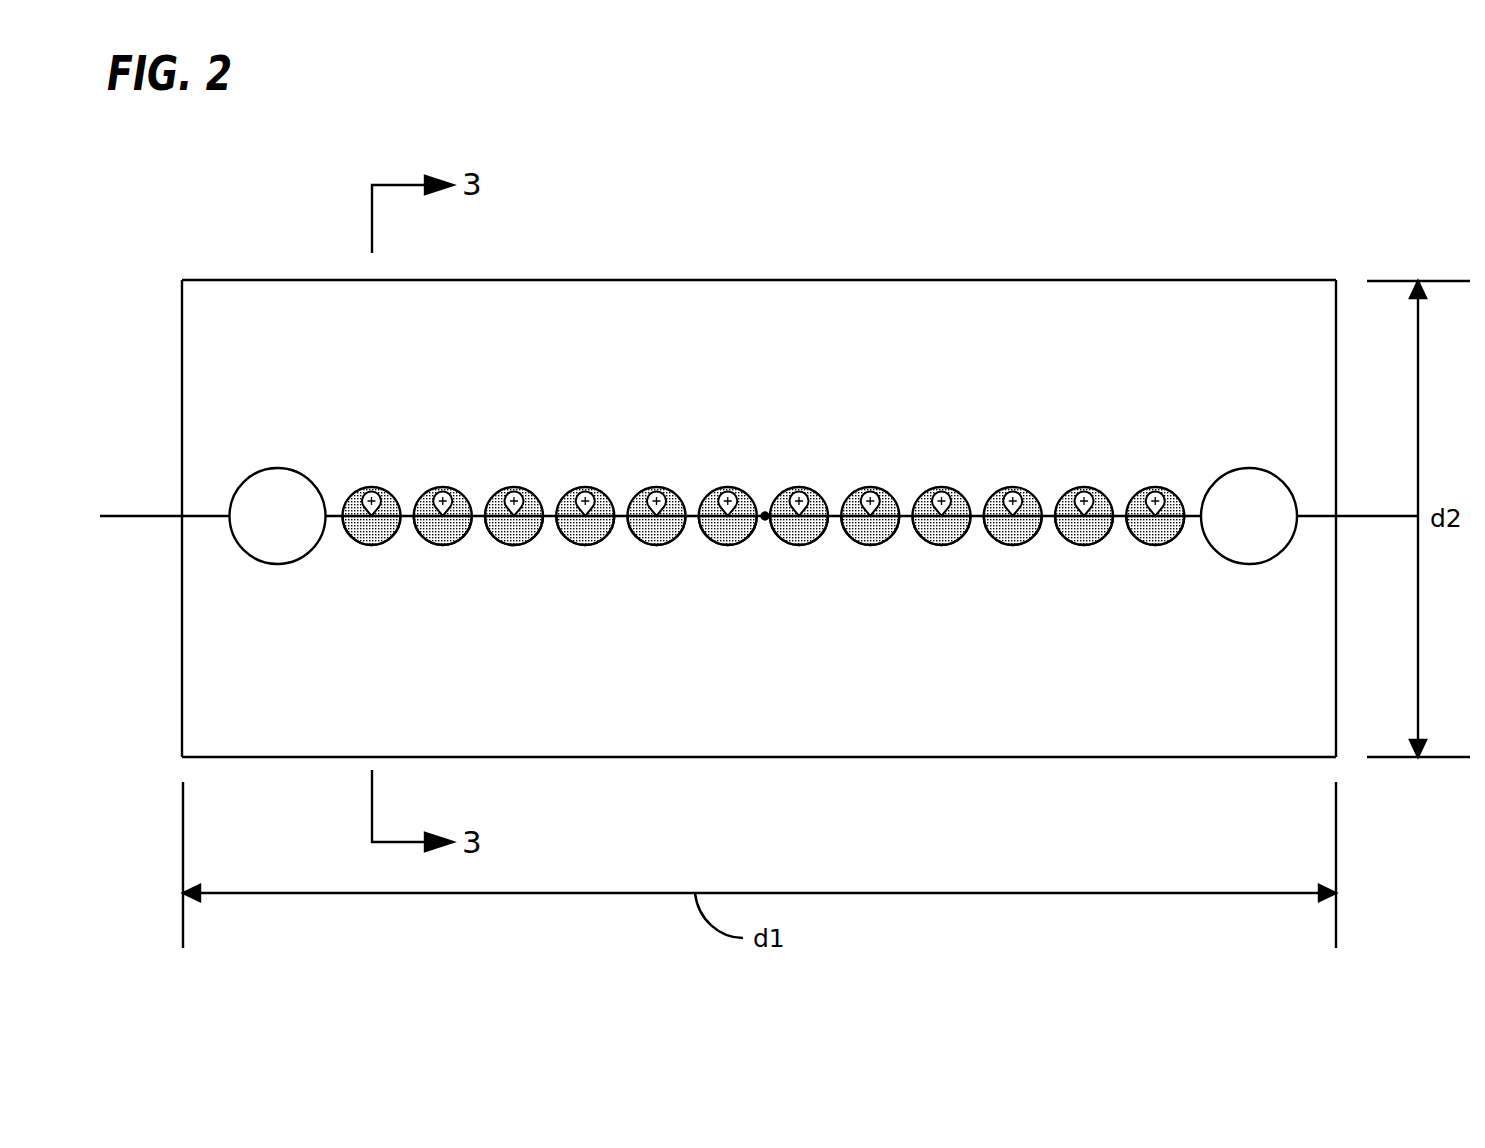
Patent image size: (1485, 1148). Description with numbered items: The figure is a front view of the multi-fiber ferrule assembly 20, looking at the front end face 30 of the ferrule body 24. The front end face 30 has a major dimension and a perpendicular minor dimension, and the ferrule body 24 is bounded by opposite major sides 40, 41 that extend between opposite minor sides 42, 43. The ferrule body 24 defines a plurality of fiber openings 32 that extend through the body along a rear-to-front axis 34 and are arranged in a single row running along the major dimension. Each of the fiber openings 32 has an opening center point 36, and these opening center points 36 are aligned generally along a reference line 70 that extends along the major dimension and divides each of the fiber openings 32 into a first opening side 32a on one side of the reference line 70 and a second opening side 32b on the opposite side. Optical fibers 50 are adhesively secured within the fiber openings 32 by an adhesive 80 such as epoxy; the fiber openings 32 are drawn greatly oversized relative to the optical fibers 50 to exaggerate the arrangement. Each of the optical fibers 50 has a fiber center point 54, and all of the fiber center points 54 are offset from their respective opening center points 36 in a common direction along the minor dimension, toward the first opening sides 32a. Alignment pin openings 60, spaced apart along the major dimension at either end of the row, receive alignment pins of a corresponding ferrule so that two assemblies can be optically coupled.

The multi-fiber ferrule assembly 20 is at (1068, 212).
The ferrule body 24 is at (848, 280).
The front end face 30 is at (807, 721).
The fiber openings 32 is at (512, 542).
The first opening side 32a is at (463, 503).
The second opening side 32b is at (445, 534).
The rear-to-front axis 34 is at (767, 510).
The opening center point 36 is at (386, 489).
The major side 40 is at (643, 280).
The major side 41 is at (687, 757).
The minor side 42 is at (180, 547).
The minor side 43 is at (1336, 557).
The optical fibers 50 is at (388, 488).
The fiber center point 54 is at (368, 496).
The alignment pin openings 60 is at (278, 468).
The reference line 70 is at (145, 515).
The adhesive 80 is at (378, 534).